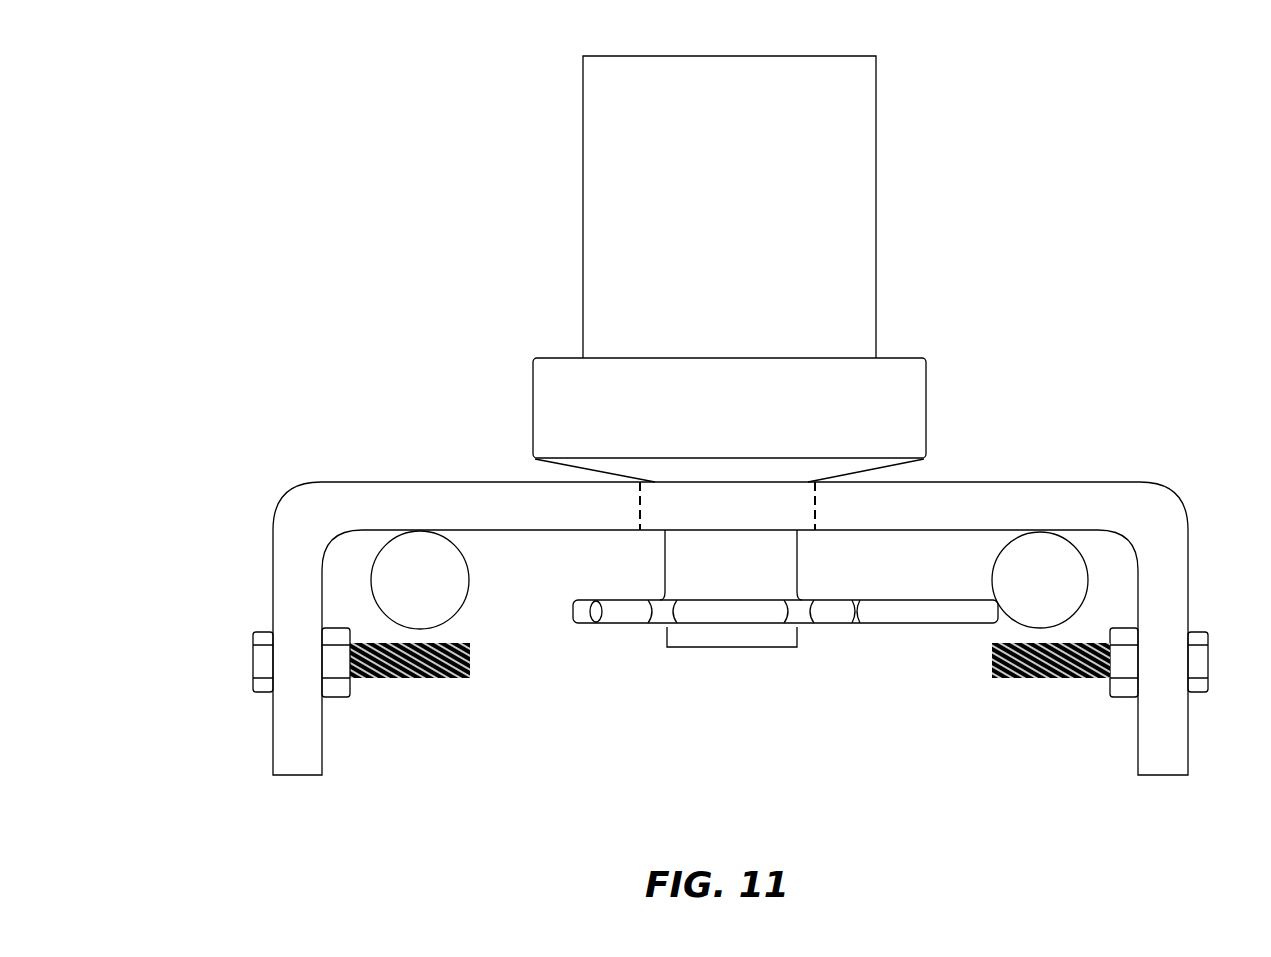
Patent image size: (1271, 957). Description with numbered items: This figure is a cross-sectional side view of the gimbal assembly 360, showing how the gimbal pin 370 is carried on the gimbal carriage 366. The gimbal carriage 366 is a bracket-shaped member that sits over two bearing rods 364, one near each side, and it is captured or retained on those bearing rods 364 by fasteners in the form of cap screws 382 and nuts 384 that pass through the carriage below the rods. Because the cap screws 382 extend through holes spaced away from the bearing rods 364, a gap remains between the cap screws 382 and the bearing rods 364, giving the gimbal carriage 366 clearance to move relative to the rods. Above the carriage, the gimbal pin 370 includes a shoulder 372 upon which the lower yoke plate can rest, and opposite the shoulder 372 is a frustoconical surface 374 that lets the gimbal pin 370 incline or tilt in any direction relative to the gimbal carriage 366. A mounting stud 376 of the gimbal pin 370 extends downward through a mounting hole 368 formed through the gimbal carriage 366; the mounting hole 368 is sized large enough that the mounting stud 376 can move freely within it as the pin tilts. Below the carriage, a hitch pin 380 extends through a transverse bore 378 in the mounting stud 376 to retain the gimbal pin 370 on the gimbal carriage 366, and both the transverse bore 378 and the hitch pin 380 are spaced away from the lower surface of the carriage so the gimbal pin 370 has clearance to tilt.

The mounting assembly 360 is at (332, 249).
The bearing rods 364 is at (428, 562).
The gimbal carriage 366 is at (283, 505).
The mounting hole 368 is at (808, 532).
The gimbal pin 370 is at (880, 104).
The shoulder 372 is at (892, 357).
The frustoconical surface 374 is at (870, 475).
The mounting stud 376 is at (680, 558).
The transverse bore 378 is at (660, 630).
The hitch pin 380 is at (843, 626).
The cap screws 382 is at (265, 665).
The nuts 384 is at (335, 660).